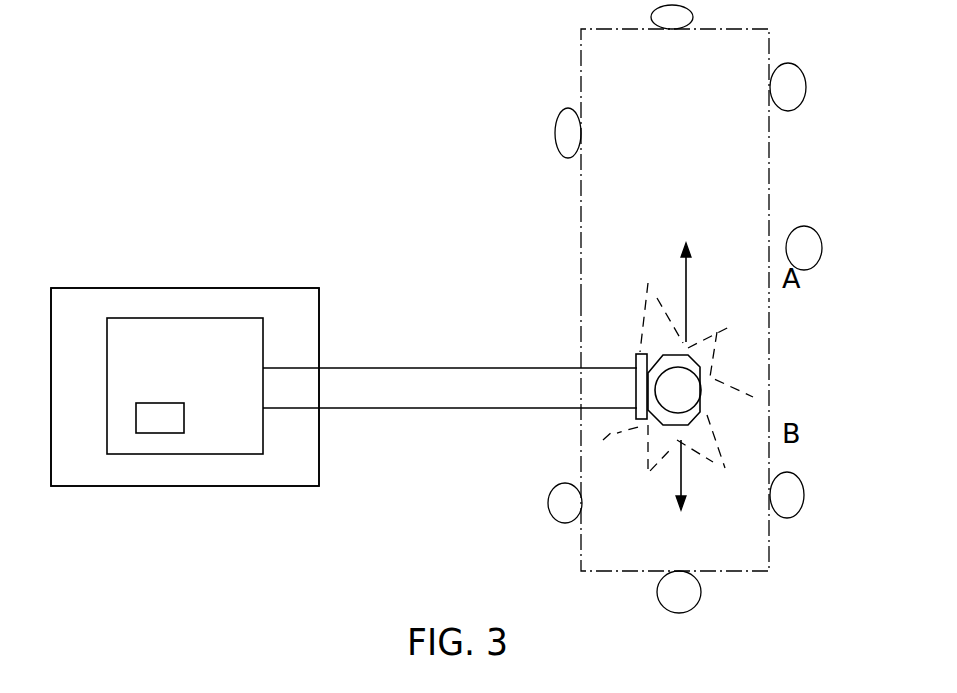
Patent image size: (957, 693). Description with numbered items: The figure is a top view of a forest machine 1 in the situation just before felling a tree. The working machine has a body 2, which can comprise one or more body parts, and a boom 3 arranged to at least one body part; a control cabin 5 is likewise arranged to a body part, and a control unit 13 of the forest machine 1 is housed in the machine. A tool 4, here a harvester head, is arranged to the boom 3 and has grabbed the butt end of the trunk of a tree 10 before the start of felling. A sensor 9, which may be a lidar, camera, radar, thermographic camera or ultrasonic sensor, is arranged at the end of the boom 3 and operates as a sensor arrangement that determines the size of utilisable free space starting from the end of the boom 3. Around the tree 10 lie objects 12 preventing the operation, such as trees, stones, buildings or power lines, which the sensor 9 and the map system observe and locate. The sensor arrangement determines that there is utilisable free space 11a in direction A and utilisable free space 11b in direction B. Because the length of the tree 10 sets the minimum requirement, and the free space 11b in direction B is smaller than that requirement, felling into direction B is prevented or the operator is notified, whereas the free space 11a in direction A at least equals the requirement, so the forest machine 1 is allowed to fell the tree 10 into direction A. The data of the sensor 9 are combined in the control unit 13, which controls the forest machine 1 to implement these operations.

The forest machine 1 is at (204, 284).
The body 2 is at (120, 303).
The boom 3 is at (410, 387).
The tool 4 is at (616, 421).
The control cabin 5 is at (124, 356).
The sensor 9 is at (638, 350).
The tree 10 is at (732, 377).
The utilisable free space in direction A 11a is at (733, 133).
The utilisable free space in direction B 11b is at (745, 540).
The objects preventing the operation 12 is at (568, 137).
The control unit 13 is at (150, 420).